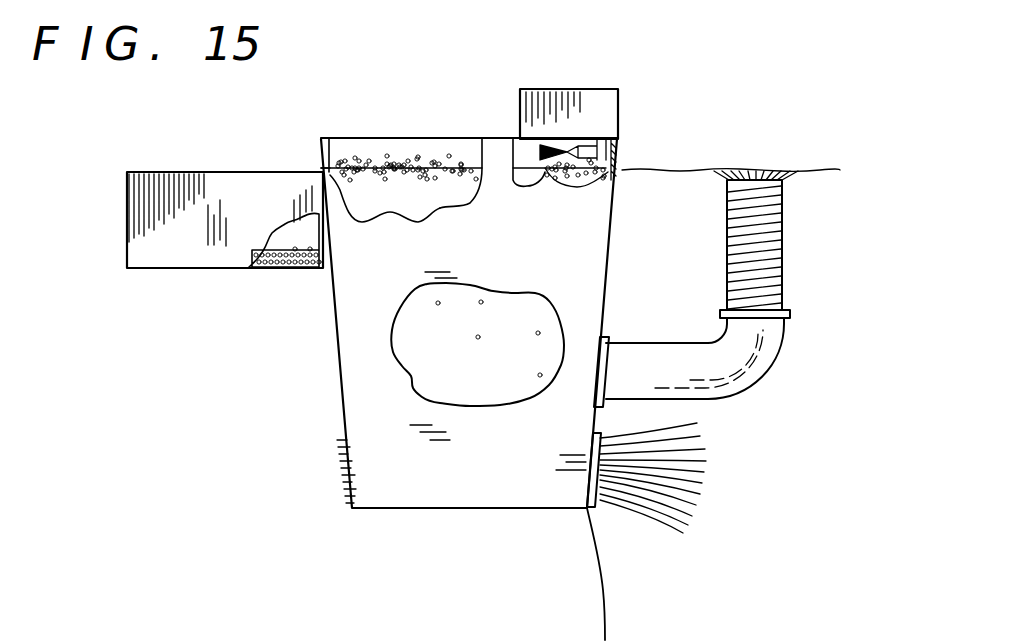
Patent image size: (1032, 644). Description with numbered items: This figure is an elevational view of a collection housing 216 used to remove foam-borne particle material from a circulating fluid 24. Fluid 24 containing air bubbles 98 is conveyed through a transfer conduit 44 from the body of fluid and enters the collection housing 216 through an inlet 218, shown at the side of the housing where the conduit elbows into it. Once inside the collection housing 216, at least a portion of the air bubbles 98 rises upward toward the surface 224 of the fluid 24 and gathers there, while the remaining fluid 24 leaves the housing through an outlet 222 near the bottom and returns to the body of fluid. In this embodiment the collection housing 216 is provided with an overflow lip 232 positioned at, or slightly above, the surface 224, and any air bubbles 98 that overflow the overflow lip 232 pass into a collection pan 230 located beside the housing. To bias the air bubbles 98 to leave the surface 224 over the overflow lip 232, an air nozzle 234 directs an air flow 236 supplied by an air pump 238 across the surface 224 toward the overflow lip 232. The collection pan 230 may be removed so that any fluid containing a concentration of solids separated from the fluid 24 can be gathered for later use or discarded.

The collection housing 216 is at (338, 355).
The inlet 218 is at (613, 333).
The outlet 222 is at (590, 512).
The surface 224 is at (524, 162).
The collection pan 230 is at (178, 270).
The overflow lip 232 is at (323, 170).
The air nozzle 234 is at (610, 168).
The air flow 236 is at (543, 180).
The air pump 238 is at (608, 90).
The fluid 24 is at (427, 198).
The transfer conduit 44 is at (785, 275).
The air bubbles 98 is at (378, 157).